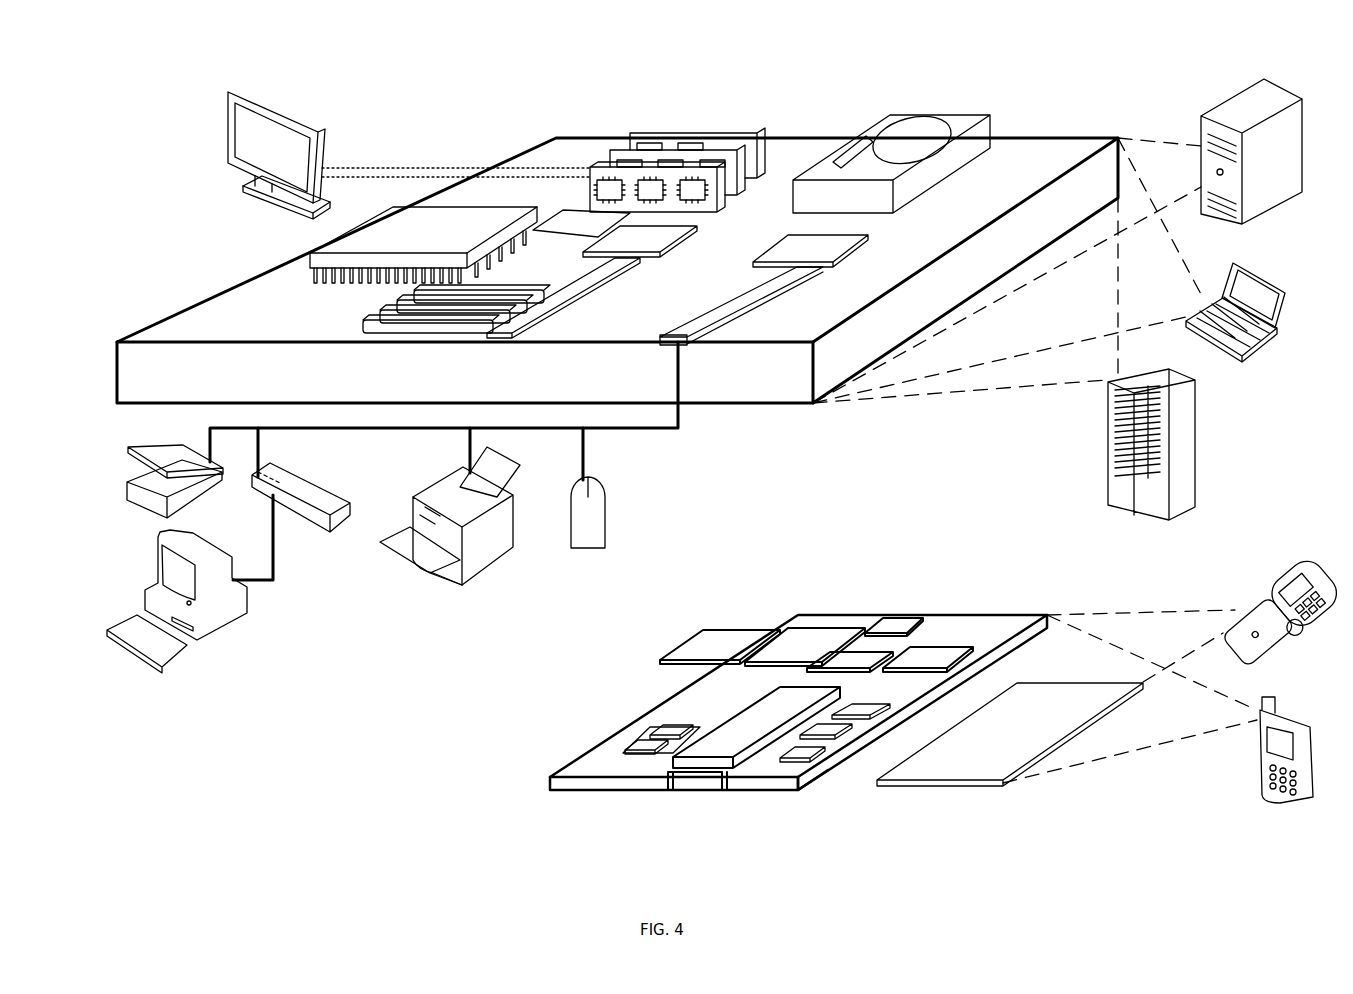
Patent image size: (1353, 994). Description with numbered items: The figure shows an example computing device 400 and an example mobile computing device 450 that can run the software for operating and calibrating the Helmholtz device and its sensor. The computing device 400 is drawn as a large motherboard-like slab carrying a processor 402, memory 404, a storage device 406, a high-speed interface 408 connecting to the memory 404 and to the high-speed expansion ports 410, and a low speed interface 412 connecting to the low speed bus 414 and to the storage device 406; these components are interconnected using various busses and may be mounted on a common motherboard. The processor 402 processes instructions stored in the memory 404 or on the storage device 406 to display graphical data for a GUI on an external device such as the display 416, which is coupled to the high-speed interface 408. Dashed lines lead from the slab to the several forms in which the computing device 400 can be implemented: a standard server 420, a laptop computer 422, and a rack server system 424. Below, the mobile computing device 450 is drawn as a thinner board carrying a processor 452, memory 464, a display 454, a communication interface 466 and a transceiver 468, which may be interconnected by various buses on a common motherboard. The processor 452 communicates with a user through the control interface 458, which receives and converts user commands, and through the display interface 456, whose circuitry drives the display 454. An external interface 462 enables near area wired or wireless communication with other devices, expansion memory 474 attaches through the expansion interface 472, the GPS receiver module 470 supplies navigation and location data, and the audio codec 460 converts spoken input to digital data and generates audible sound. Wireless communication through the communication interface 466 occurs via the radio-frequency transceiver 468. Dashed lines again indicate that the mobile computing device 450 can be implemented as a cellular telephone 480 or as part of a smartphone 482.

The computing device 400 is at (413, 46).
The processor 402 is at (308, 262).
The memory 404 is at (645, 132).
The storage device 406 is at (878, 115).
The high-speed interface 408 is at (607, 245).
The high-speed expansion ports 410 is at (380, 308).
The low speed interface 412 is at (810, 245).
The low speed bus 414 is at (690, 342).
The display 416 is at (228, 92).
The standard server 420 is at (1201, 116).
The laptop computer 422 is at (1232, 262).
The rack server system 424 is at (1108, 462).
The mobile computing device 450 is at (773, 582).
The processor 452 is at (725, 772).
The display 454 is at (1000, 782).
The display interface 456 is at (812, 780).
The control interface 458 is at (855, 745).
The audio codec 460 is at (860, 716).
The external interface 462 is at (693, 785).
The memory 464 is at (643, 740).
The communication interface 466 is at (850, 654).
The transceiver 468 is at (928, 650).
The GPS receiver module 470 is at (890, 618).
The expansion interface 472 is at (763, 628).
The expansion memory 474 is at (703, 628).
The cellular telephone 480 is at (1286, 552).
The smartphone 482 is at (1266, 700).